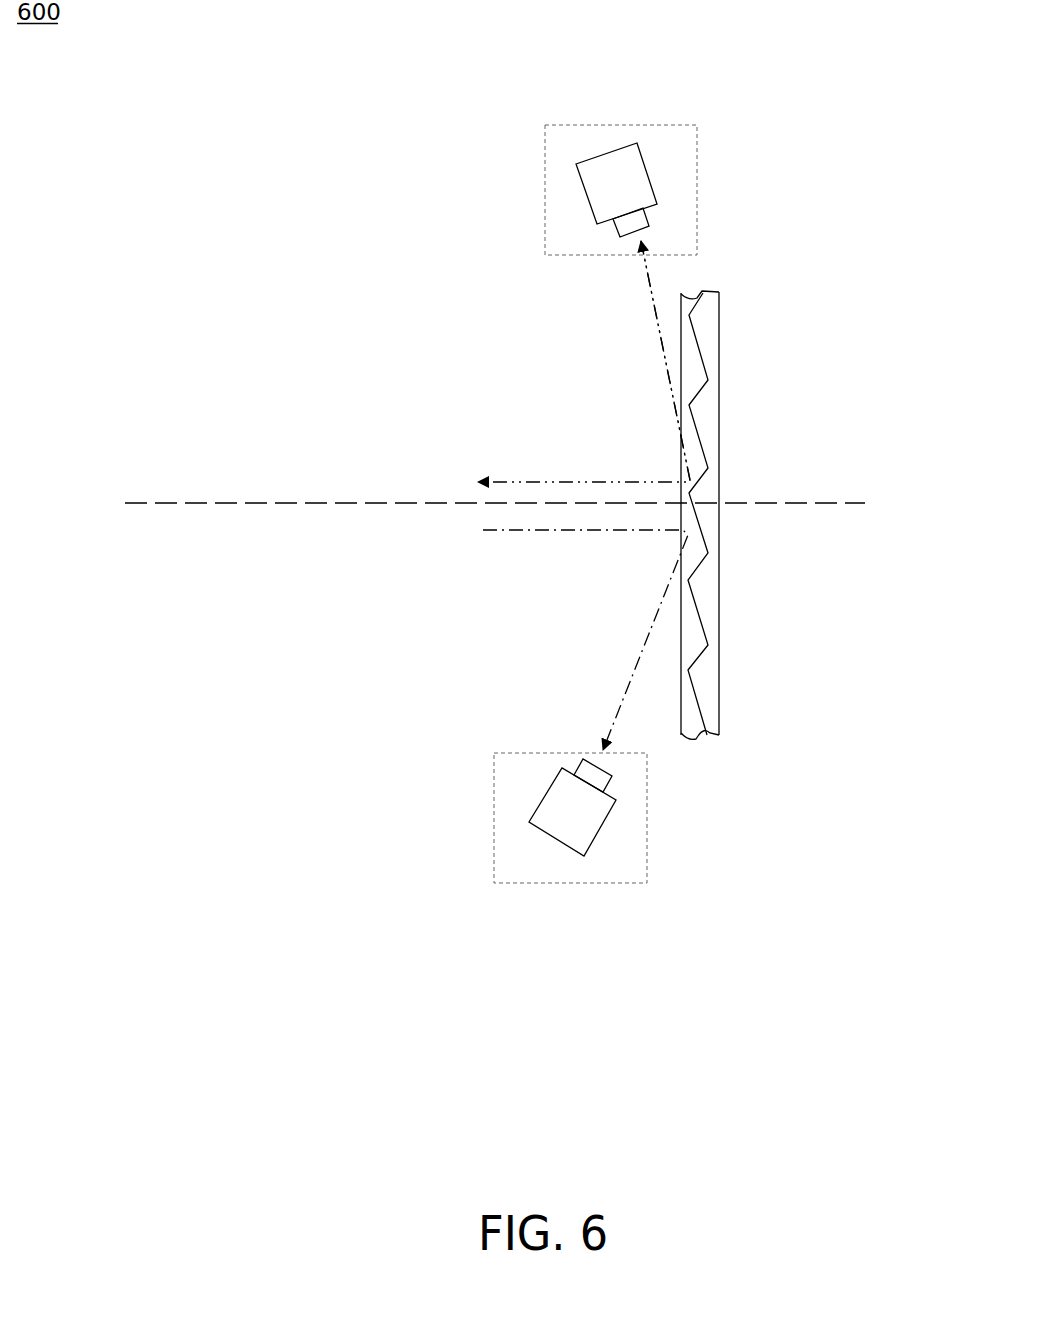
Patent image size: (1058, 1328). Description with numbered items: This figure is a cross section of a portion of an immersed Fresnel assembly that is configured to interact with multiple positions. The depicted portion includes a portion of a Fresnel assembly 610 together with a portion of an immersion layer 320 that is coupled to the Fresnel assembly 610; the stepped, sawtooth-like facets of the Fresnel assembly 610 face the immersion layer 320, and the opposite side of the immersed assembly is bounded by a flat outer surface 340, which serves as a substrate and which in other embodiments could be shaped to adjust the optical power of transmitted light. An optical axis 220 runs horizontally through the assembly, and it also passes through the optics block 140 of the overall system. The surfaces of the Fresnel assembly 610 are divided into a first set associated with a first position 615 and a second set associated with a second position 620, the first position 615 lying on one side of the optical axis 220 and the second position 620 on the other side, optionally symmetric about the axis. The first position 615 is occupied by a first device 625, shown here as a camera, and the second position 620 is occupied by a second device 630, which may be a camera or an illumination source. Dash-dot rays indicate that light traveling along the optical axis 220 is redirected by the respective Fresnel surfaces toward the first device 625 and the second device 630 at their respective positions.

The optics block 140 is at (820, 787).
The Fresnel assembly 610 is at (822, 352).
The immersion layer 320 is at (689, 338).
The outer surface 340 is at (681, 365).
The optical axis 220 is at (532, 510).
The second position 620 is at (802, 122).
The second device 630 is at (622, 190).
The first position 615 is at (570, 880).
The first device 625 is at (580, 817).